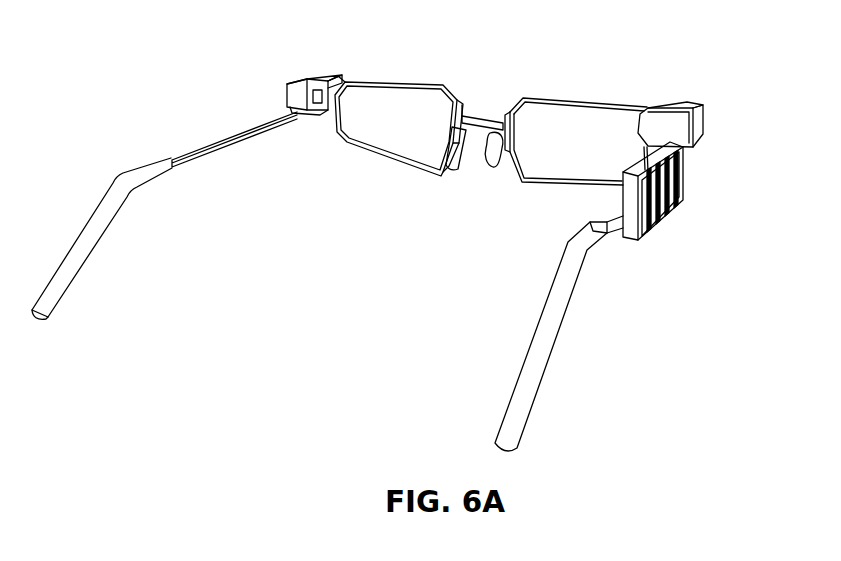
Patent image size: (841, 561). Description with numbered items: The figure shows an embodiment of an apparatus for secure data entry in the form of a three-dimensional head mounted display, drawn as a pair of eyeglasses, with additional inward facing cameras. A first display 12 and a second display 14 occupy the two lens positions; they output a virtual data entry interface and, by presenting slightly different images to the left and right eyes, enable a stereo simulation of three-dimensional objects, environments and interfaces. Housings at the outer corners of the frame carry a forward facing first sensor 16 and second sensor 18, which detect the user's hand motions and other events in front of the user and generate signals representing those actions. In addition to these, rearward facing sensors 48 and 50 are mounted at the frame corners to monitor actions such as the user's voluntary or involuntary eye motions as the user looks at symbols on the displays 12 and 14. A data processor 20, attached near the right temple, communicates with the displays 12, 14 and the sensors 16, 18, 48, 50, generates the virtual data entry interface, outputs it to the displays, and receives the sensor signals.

The first display 12 is at (393, 119).
The second display 14 is at (562, 133).
The first sensor 16 is at (327, 74).
The second sensor 18 is at (680, 100).
The rearward facing sensor 48 is at (296, 78).
The rearward facing sensor 50 is at (668, 105).
The data processor 20 is at (658, 222).